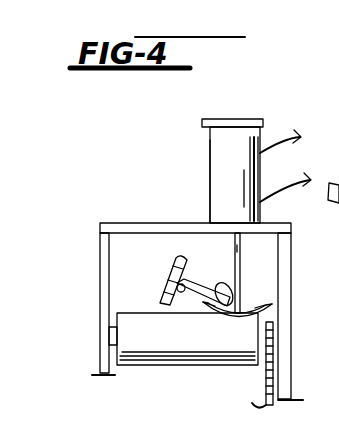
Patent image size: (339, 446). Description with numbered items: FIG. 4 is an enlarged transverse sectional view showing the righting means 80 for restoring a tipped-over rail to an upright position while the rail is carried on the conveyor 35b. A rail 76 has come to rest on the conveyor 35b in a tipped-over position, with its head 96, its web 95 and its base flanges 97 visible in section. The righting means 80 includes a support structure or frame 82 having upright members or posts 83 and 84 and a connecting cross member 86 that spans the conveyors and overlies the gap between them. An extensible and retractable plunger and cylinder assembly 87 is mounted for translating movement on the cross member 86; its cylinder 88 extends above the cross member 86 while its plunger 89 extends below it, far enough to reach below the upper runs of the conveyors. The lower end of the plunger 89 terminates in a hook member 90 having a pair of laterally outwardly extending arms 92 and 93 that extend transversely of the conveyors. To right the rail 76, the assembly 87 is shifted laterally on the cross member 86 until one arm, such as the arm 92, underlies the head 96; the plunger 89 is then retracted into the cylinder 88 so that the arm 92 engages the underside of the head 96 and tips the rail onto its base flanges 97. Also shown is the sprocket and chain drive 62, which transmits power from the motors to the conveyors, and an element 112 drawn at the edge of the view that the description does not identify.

The righting means 80 is at (182, 135).
The plunger and cylinder assembly 87 is at (206, 182).
The cylinder 88 is at (243, 170).
The control 112 is at (330, 172).
The cross member 86 is at (135, 228).
The support structure or frame 82 is at (100, 268).
The upright members or posts 83 is at (103, 313).
The upright members or posts 84 is at (292, 285).
The base flanges 97 is at (187, 262).
The rail 76 is at (174, 270).
The conveyor 35b is at (142, 312).
The plunger 89 is at (235, 248).
The head 96 is at (230, 288).
The web 95 is at (192, 294).
The hook member 90 is at (243, 309).
The arm 92 is at (218, 307).
The arm 93 is at (256, 318).
The sprocket and chain drive 62 is at (274, 368).